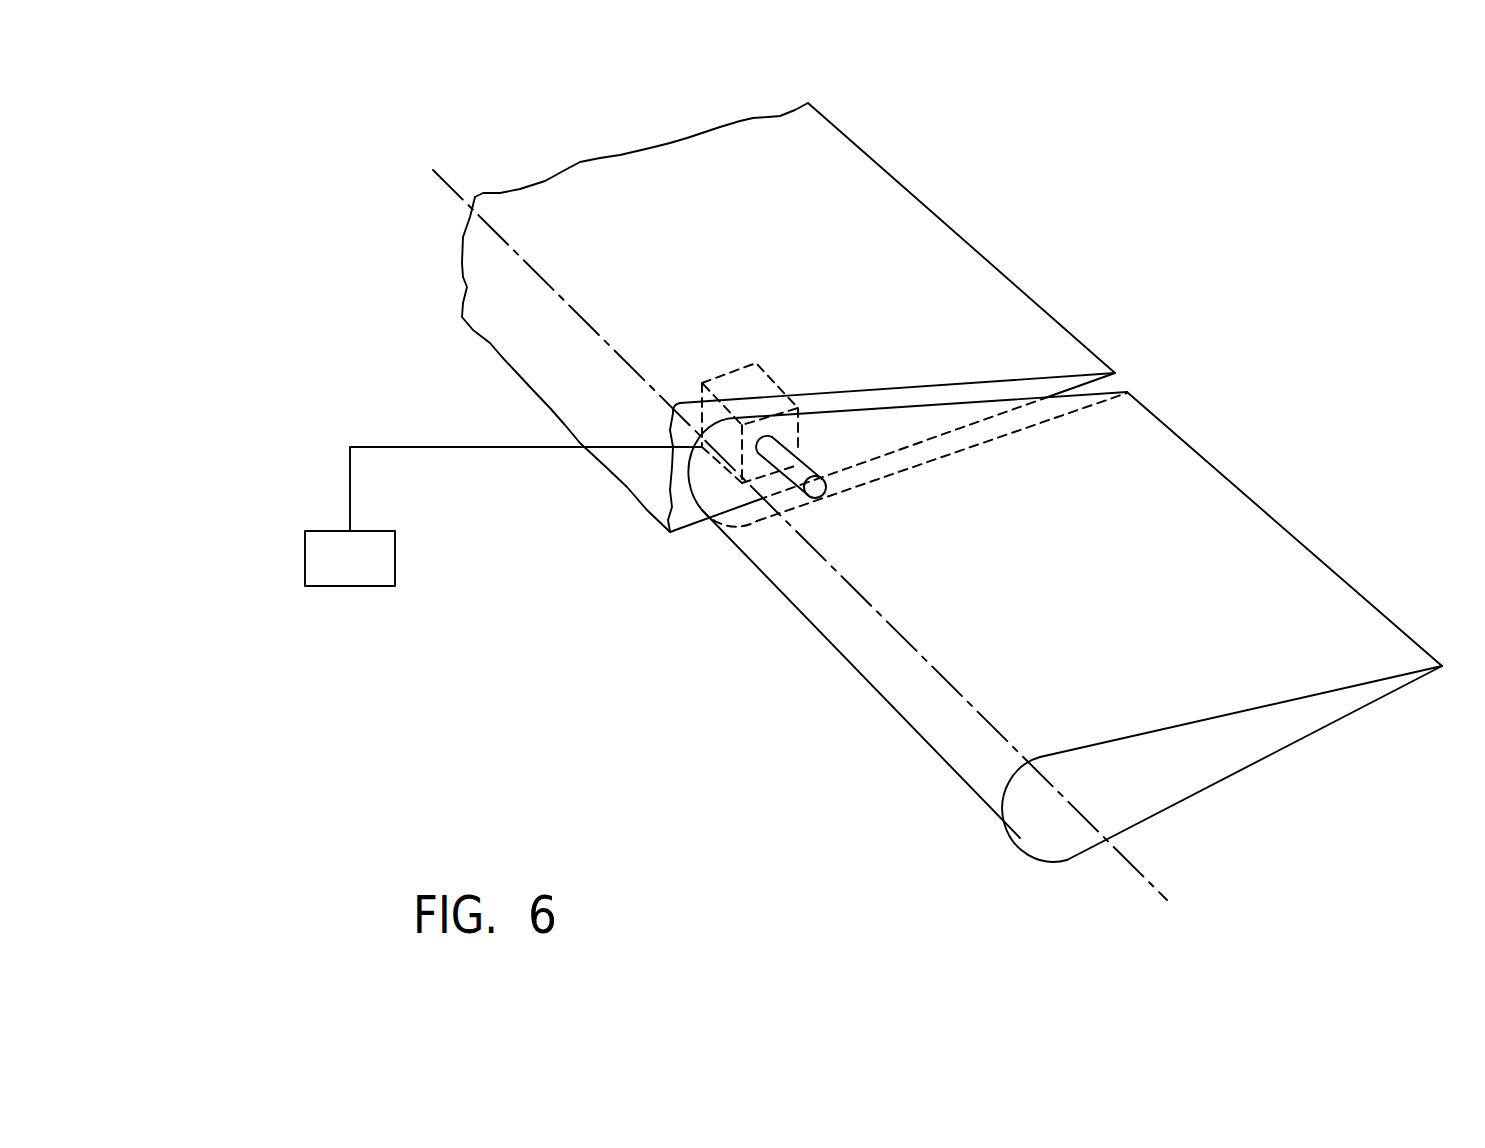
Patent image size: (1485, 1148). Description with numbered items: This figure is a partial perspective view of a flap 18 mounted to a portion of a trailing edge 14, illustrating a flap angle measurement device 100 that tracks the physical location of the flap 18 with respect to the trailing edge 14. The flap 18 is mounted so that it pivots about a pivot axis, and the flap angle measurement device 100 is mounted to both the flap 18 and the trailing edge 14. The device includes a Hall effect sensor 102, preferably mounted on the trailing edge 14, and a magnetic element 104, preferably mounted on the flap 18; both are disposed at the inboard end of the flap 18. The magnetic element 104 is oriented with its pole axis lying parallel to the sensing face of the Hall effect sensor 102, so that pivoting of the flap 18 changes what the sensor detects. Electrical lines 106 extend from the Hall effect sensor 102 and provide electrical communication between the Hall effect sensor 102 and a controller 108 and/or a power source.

The trailing edge 14 is at (943, 257).
The flap 18 is at (1243, 548).
The flap angle measurement device 100 is at (800, 535).
The Hall effect sensor 102 is at (738, 383).
The magnetic element 104 is at (793, 467).
The electrical lines 106 is at (423, 447).
The controller 108 is at (322, 563).